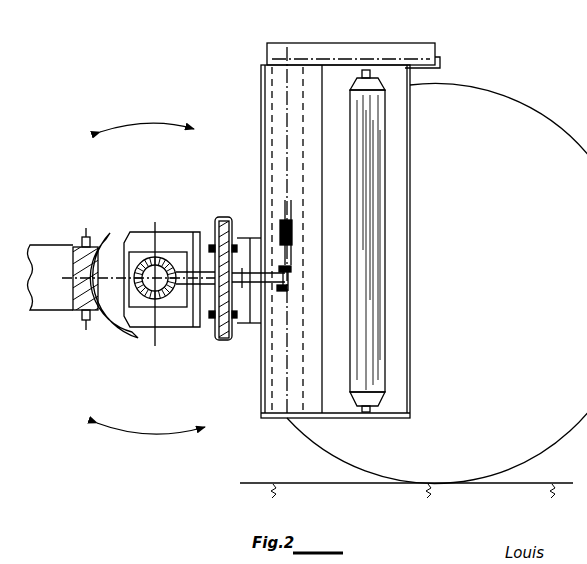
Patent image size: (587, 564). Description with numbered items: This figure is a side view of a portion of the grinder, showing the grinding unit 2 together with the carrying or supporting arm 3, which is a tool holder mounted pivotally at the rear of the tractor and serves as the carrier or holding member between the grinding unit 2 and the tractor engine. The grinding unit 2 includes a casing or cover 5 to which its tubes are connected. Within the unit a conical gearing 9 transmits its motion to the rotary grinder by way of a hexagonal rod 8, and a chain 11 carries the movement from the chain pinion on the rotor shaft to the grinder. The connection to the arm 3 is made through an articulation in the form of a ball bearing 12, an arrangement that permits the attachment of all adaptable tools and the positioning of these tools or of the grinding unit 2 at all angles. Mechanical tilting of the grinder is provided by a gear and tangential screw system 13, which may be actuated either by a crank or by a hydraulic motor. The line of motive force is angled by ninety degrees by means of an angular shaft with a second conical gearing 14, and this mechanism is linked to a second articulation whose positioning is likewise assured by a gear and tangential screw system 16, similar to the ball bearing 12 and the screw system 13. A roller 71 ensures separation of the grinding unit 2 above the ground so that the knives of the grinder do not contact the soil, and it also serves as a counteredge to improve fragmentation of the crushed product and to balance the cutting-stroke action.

The grinding unit 2 is at (492, 52).
The carrying or supporting arm 3 is at (47, 305).
The casing or cover 5 is at (385, 58).
The hexagonal rod 8 is at (285, 216).
The conical gearing 9 is at (284, 284).
The chain 11 is at (303, 58).
The ball bearing 12 is at (241, 312).
The gear and tangential screw system 13 is at (219, 222).
The second conical gearing 14 is at (165, 298).
The gear and tangential screw system 16 is at (115, 322).
The roller 71 is at (373, 272).